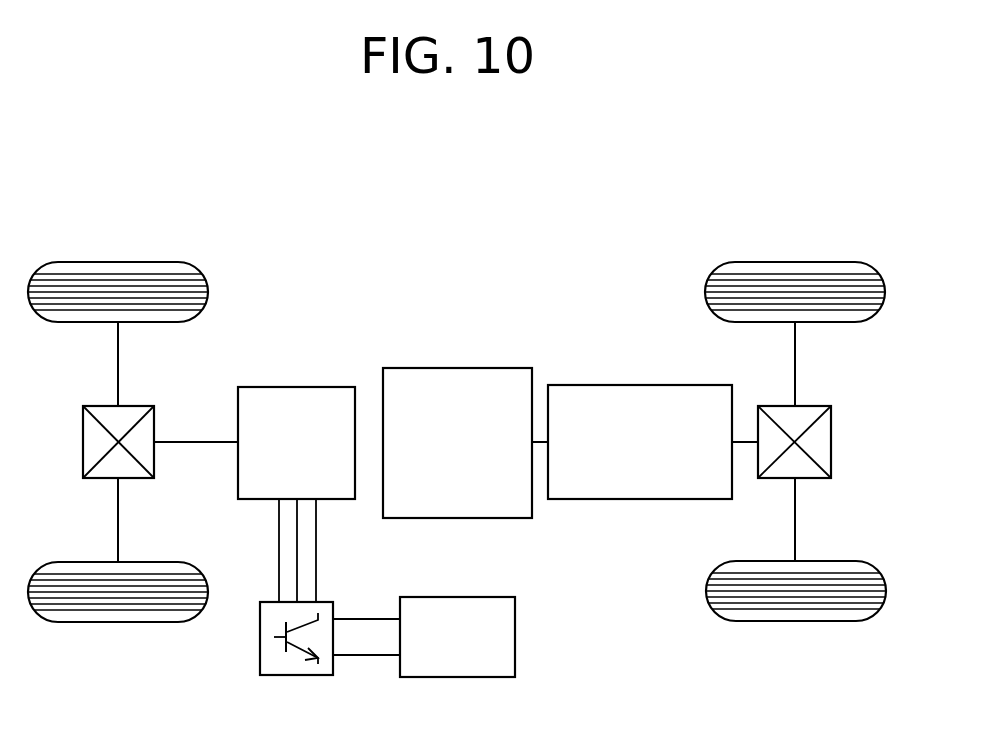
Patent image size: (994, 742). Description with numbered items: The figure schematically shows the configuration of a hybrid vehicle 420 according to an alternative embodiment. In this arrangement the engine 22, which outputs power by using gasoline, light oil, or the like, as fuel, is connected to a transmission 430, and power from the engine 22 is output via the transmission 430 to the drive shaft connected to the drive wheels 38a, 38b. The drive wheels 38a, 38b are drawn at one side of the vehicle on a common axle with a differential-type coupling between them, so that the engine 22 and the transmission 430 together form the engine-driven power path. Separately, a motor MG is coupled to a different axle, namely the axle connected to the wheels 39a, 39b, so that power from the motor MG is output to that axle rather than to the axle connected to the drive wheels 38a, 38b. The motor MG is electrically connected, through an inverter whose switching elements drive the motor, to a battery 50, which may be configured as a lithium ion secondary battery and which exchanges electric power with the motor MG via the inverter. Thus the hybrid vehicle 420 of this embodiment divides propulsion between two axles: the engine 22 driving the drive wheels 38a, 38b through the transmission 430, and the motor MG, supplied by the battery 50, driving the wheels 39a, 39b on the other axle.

The hybrid vehicle 420 is at (563, 210).
The wheel 39a is at (118, 262).
The wheel 39b is at (118, 622).
The drive wheel 38a is at (795, 262).
The drive wheel 38b is at (795, 622).
The motor MG is at (297, 386).
The engine 22 is at (457, 367).
The transmission 430 is at (618, 385).
The battery 50 is at (457, 597).